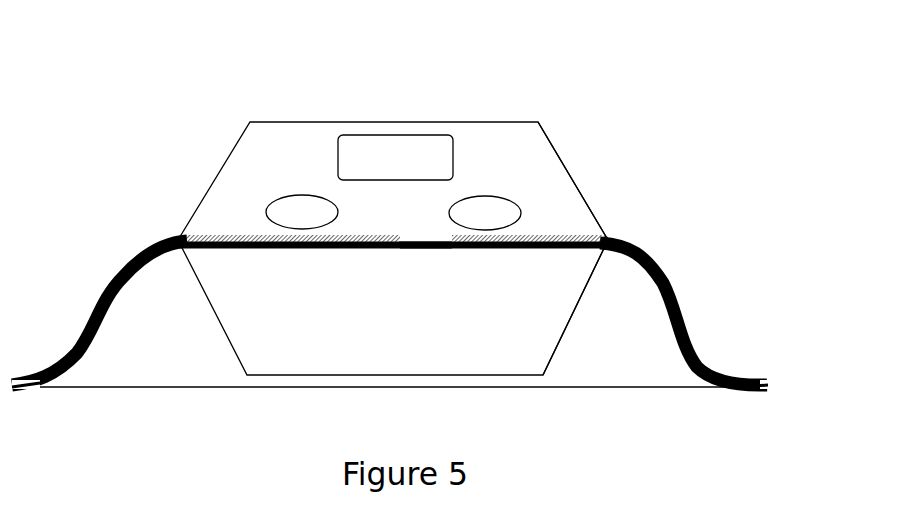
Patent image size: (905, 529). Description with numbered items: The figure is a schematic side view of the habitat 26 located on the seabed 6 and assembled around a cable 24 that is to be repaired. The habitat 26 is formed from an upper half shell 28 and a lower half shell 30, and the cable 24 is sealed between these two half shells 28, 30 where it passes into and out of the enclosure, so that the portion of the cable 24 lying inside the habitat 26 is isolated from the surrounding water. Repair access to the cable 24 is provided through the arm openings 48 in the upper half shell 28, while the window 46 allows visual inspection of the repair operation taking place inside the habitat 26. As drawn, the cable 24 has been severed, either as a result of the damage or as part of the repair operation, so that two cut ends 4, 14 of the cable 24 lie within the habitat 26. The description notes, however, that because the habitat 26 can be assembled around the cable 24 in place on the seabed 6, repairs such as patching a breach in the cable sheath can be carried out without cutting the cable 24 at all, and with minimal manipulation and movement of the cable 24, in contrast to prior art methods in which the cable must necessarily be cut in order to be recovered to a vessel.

The cut end 4 is at (397, 250).
The seabed 6 is at (613, 386).
The cut end 14 is at (451, 247).
The cable 24 is at (683, 315).
The habitat 26 is at (208, 122).
The upper half shell 28 is at (582, 197).
The lower half shell 30 is at (585, 290).
The window 46 is at (411, 166).
The arm openings 48 is at (309, 216).